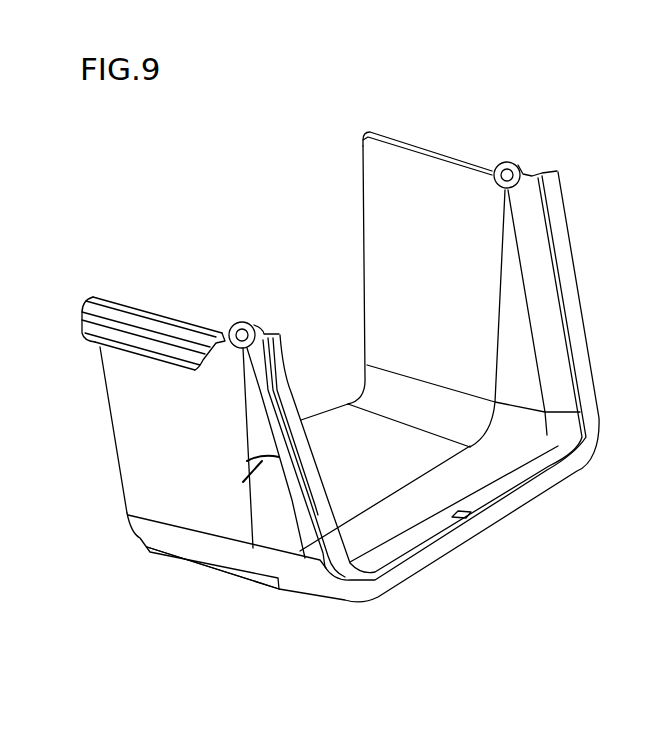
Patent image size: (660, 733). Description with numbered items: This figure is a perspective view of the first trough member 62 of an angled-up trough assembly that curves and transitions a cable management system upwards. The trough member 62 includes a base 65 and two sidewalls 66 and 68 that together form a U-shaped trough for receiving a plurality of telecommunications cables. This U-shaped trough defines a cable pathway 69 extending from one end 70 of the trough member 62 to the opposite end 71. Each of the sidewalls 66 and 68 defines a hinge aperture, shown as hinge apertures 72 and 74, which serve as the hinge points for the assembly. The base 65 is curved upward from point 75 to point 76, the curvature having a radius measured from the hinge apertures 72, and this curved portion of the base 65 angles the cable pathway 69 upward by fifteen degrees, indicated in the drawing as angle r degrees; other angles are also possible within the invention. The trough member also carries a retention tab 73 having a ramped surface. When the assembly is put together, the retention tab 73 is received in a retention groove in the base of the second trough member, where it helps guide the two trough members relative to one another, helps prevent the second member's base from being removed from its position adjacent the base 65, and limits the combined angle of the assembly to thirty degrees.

The trough member 62 is at (442, 100).
The base 65 is at (338, 425).
The sidewall 66 is at (385, 187).
The sidewall 68 is at (133, 413).
The cable pathway 69 is at (402, 462).
The end 70 is at (422, 565).
The end 71 is at (362, 162).
The hinge aperture 72 is at (505, 172).
The retention tab 73 is at (468, 512).
The hinge aperture 74 is at (238, 333).
The point 75 is at (366, 512).
The point 76 is at (417, 529).